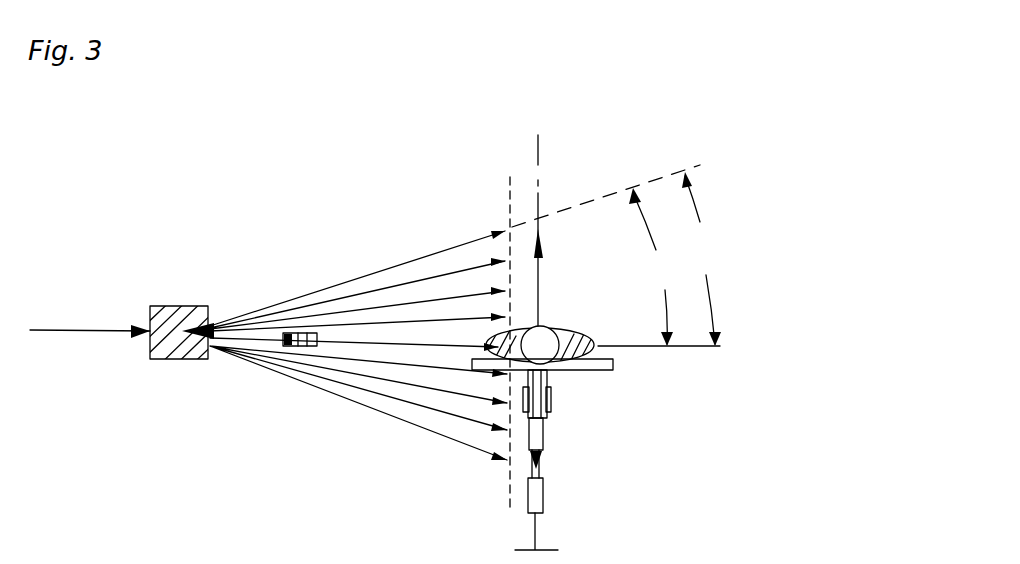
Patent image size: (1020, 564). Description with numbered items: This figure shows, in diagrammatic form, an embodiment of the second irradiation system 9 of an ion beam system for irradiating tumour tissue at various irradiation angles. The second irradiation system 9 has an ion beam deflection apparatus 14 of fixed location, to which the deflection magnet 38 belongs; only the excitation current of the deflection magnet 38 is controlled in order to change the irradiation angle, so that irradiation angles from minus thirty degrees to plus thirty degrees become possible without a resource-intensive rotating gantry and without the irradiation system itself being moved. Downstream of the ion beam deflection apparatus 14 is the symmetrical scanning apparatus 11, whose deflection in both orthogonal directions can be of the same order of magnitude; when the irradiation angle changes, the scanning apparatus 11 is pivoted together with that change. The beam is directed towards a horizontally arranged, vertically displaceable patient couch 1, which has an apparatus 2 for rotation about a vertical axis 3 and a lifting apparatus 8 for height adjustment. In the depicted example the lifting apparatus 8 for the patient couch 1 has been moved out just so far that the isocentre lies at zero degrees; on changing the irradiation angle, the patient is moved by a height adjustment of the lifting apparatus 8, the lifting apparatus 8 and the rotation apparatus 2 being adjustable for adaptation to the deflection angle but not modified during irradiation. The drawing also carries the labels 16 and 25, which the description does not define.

The patient couch 1 is at (614, 366).
The apparatus for rotation 2 is at (550, 404).
The vertical axis 3 is at (539, 150).
The lifting apparatus 8 is at (542, 471).
The second irradiation system 9 is at (632, 132).
The scanning apparatus 11 is at (300, 347).
The ion beam deflection apparatus 14 is at (195, 272).
The incoming light beam 16 is at (78, 327).
The sample / lens 25 is at (578, 328).
The deflection magnet 38 is at (174, 359).